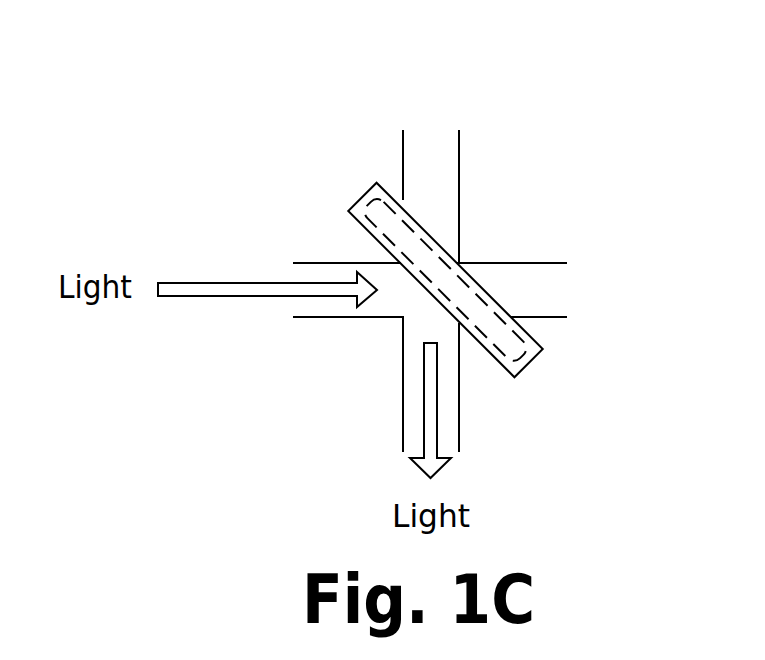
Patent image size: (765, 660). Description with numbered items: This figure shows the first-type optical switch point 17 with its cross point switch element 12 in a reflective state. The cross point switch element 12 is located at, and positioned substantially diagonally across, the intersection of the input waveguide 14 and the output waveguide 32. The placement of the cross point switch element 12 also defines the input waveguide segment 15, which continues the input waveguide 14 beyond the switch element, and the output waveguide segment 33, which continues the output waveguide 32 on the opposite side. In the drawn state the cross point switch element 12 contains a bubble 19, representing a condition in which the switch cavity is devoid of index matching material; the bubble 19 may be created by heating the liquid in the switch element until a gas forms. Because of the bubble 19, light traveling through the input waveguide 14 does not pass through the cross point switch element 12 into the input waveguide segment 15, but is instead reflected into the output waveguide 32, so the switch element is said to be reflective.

The first-type optical switch point 17 is at (296, 68).
The cross point switch element 12 is at (362, 195).
The output waveguide segment 33 is at (460, 187).
The bubble 19 is at (460, 263).
The input waveguide segment 15 is at (530, 262).
The input waveguide 14 is at (355, 317).
The output waveguide 32 is at (458, 390).